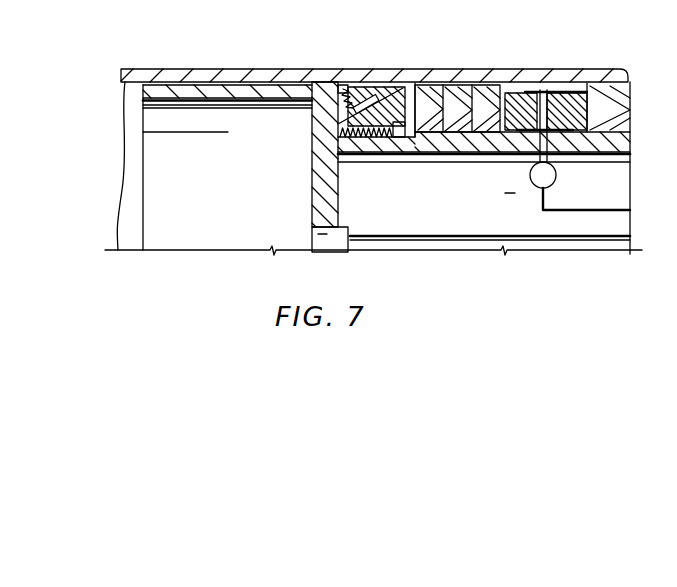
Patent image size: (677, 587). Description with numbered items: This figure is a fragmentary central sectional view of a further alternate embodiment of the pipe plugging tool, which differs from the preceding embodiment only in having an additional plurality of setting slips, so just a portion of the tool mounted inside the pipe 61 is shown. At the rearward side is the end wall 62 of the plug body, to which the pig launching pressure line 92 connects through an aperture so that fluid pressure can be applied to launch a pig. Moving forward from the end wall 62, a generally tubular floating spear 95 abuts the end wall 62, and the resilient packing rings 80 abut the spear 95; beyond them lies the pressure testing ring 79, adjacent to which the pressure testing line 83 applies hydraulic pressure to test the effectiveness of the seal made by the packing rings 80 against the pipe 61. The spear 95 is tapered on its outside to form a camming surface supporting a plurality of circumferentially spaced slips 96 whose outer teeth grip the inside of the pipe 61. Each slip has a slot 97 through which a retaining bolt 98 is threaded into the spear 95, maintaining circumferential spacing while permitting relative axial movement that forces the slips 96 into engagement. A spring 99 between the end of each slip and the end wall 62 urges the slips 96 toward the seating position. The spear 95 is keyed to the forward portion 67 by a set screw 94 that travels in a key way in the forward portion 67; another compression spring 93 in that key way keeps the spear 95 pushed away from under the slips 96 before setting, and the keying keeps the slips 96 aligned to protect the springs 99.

The pipe 61 is at (235, 69).
The end wall 62 is at (320, 192).
The forward portion 67 is at (452, 152).
The pressure testing ring 79 is at (530, 93).
The packing rings 80 is at (490, 85).
The pressure testing line 83 is at (550, 200).
The pig launching pressure line 92 is at (470, 236).
The compression spring 93 is at (322, 151).
The set screw 94 is at (413, 88).
The floating spear 95 is at (393, 138).
The slips 96 is at (336, 106).
The slot 97 is at (376, 92).
The retaining bolt 98 is at (360, 95).
The spring 99 is at (342, 89).